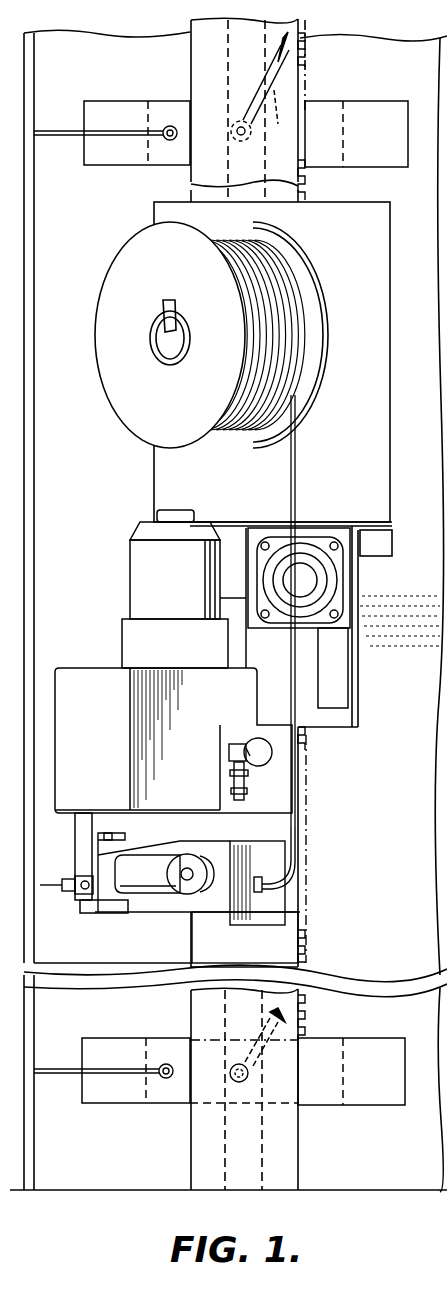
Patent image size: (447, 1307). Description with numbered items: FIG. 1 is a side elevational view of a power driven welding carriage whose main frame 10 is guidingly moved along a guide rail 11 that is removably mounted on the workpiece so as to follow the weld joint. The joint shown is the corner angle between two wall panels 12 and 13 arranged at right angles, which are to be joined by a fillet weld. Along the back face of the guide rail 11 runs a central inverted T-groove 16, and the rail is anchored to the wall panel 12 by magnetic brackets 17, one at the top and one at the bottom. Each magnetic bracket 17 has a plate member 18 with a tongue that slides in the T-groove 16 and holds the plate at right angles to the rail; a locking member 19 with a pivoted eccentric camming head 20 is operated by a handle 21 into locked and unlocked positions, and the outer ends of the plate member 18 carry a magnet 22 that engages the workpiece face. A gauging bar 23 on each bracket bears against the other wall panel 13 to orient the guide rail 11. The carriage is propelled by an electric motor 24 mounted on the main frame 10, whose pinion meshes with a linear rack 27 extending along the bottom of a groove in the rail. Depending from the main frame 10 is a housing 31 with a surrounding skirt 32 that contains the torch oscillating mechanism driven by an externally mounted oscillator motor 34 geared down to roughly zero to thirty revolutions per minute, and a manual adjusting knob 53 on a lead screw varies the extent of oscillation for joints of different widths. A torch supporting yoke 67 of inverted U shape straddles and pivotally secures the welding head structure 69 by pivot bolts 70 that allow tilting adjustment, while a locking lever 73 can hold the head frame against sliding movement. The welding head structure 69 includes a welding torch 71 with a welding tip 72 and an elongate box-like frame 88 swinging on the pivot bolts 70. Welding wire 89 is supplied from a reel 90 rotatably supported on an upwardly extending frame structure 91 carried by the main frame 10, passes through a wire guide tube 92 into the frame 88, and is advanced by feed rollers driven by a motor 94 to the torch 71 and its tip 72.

The main frame 10 is at (355, 670).
The guide rail 11 is at (258, 60).
The wall panel 12 is at (432, 82).
The wall panel 13 is at (32, 84).
The inverted T-groove 16 is at (236, 156).
The magnetic bracket 17 is at (172, 98).
The plate member 18 is at (334, 150).
The locking member 19 is at (292, 32).
The eccentric camming head 20 is at (236, 122).
The handle 21 is at (269, 571).
The magnet 22 is at (150, 102).
The gauging bar 23 is at (52, 130).
The electric motor 24 is at (338, 590).
The linear rack 27 is at (305, 737).
The housing 31 is at (98, 640).
The skirt 32 is at (102, 742).
The oscillator motor 34 is at (146, 586).
The manual adjusting knob 53 is at (256, 740).
The torch supporting yoke 67 is at (74, 816).
The welding head structure 69 is at (140, 855).
The pivot bolt 70 is at (78, 882).
The welding torch 71 is at (70, 902).
The welding tip 72 is at (44, 890).
The locking lever 73 is at (234, 786).
The box-like frame 88 is at (226, 906).
The welding wire 89 is at (296, 476).
The reel 90 is at (176, 280).
The frame structure 91 is at (366, 288).
The wire guide tube 92 is at (298, 874).
The motor 94 is at (178, 896).